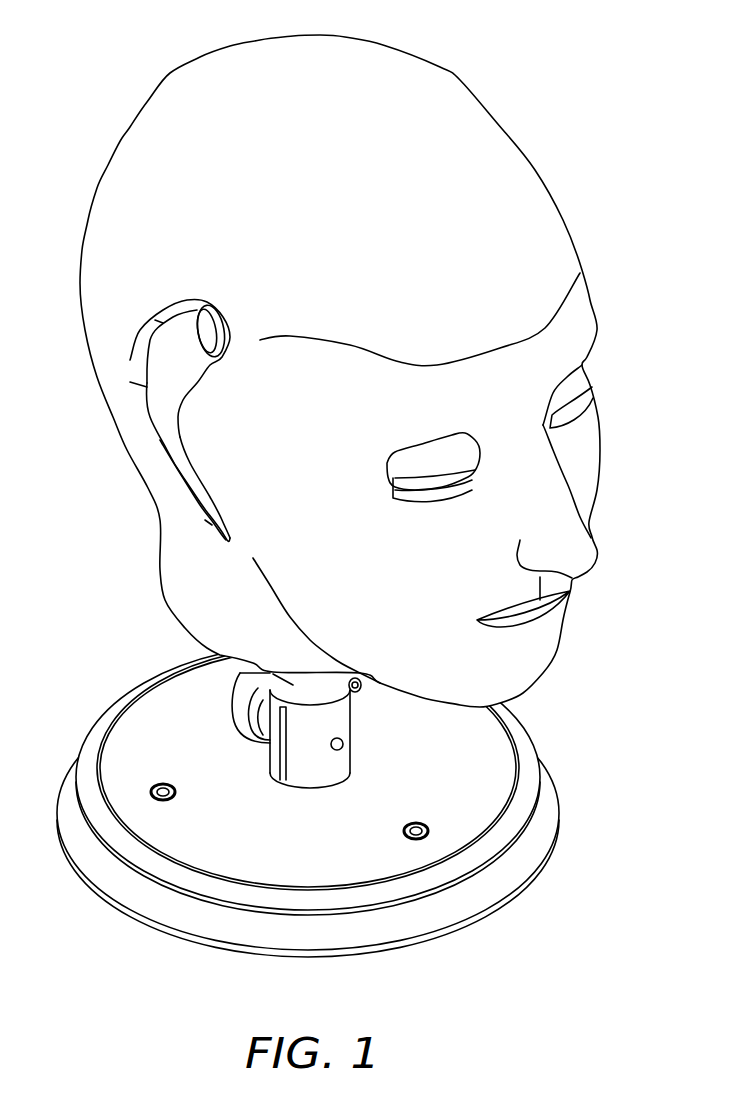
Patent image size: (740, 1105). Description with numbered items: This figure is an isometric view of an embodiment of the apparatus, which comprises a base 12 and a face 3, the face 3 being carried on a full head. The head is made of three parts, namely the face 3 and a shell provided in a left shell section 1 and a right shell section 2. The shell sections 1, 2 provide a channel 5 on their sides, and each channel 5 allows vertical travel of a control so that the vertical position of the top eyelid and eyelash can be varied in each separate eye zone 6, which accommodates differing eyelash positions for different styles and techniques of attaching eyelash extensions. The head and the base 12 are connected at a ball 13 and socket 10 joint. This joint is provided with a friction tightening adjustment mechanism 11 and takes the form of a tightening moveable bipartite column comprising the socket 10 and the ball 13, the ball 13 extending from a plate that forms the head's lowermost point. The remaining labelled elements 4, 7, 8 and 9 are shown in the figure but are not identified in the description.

The left shell section 1 is at (245, 175).
The right shell section 2 is at (461, 86).
The face 3 is at (198, 440).
The ear upper portion 4 is at (175, 303).
The channel 5 is at (138, 340).
The eye zone 6 is at (420, 405).
The nose 7 is at (580, 552).
The face 8 is at (568, 706).
The base plate 9 is at (172, 705).
The socket 10 is at (328, 762).
The friction tightening adjustment mechanism 11 is at (240, 730).
The base 12 is at (553, 822).
The ball 13 is at (211, 656).